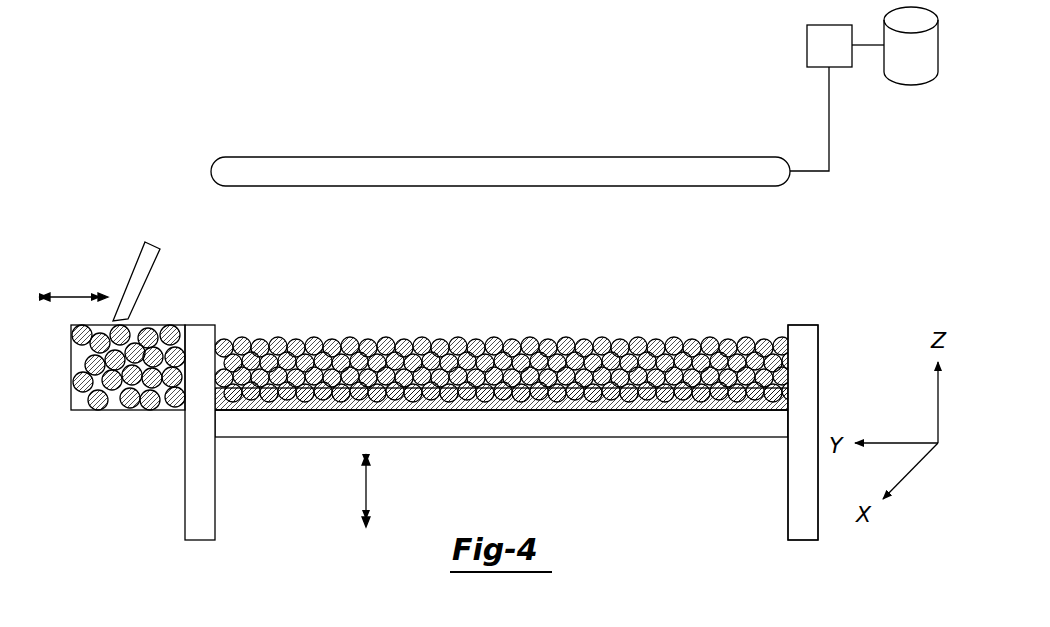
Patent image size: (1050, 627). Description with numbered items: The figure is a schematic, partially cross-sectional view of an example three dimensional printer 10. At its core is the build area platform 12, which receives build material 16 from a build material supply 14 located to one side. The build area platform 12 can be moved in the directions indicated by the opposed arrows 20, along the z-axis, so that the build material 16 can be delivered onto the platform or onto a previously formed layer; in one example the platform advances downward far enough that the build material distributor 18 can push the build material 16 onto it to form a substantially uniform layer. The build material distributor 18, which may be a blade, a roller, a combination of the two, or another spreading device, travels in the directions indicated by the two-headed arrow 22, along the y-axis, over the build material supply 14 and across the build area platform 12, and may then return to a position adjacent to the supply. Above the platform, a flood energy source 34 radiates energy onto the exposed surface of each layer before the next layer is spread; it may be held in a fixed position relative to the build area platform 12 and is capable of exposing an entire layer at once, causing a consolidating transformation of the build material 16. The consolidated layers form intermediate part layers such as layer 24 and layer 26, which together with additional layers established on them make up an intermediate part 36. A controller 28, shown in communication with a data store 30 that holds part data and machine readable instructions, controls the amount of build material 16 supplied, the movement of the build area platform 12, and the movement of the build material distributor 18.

The three dimensional (3D) printer 10 is at (285, 102).
The build area platform 12 is at (655, 423).
The build material supply 14 is at (80, 412).
The build material 16 is at (150, 400).
The build material distributor 18 is at (133, 268).
The opposed arrows 20 is at (362, 490).
The two-headed arrow 22 is at (70, 296).
The layer 24 is at (527, 411).
The layer 26 is at (794, 385).
The controller 28 is at (840, 58).
The data store 30 is at (922, 65).
The flood energy source 34 is at (499, 157).
The intermediate part 36 is at (457, 316).